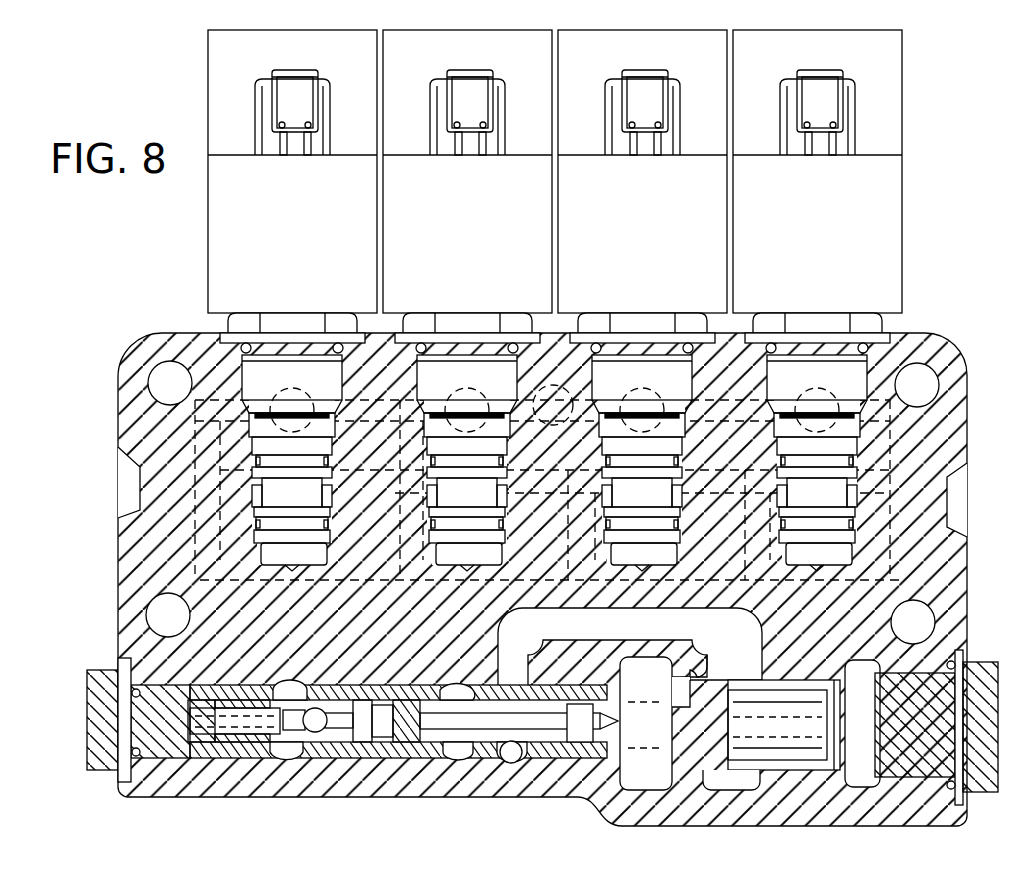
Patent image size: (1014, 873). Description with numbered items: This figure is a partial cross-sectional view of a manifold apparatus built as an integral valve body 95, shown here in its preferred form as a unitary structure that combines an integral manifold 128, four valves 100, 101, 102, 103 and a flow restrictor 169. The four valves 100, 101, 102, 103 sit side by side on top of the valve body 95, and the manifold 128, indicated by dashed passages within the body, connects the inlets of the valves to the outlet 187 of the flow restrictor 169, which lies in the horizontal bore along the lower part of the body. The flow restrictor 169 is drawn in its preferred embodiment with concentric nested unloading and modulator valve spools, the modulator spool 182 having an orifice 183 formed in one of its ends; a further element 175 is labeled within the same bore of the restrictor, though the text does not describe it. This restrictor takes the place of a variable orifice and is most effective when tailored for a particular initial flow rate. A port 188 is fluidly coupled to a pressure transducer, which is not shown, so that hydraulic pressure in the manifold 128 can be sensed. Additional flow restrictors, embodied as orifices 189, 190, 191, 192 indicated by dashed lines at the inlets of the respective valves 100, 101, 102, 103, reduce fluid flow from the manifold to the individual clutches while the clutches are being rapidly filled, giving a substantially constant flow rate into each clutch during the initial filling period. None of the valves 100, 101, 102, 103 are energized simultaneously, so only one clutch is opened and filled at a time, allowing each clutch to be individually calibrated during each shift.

The valve body 95 is at (138, 339).
The valve 100 is at (311, 233).
The valve 101 is at (486, 233).
The valve 102 is at (661, 233).
The valve 103 is at (836, 233).
The manifold 128 is at (195, 447).
The flow restrictor 169 is at (340, 655).
The outlet 187 is at (325, 690).
The port 188 is at (548, 402).
The orifice 189 is at (292, 410).
The orifice 190 is at (467, 410).
The orifice 191 is at (648, 410).
The orifice 192 is at (815, 410).
The modulator valve spool 182 is at (320, 700).
The spool 175 is at (356, 693).
The orifice 183 is at (582, 747).